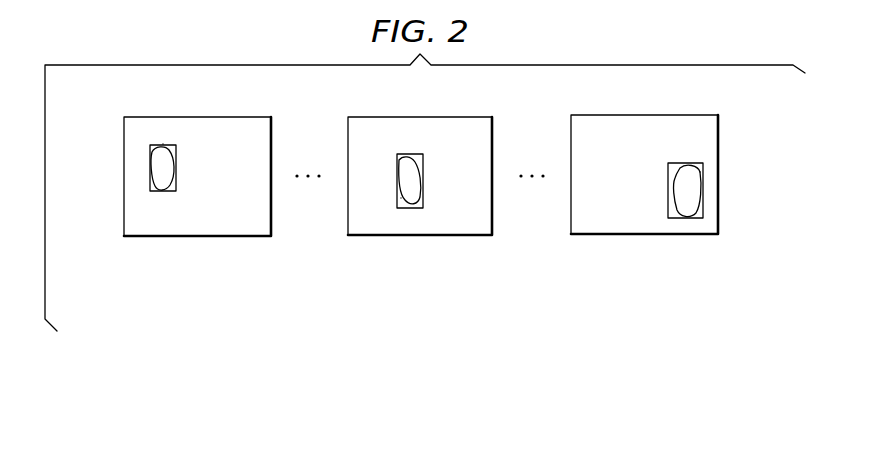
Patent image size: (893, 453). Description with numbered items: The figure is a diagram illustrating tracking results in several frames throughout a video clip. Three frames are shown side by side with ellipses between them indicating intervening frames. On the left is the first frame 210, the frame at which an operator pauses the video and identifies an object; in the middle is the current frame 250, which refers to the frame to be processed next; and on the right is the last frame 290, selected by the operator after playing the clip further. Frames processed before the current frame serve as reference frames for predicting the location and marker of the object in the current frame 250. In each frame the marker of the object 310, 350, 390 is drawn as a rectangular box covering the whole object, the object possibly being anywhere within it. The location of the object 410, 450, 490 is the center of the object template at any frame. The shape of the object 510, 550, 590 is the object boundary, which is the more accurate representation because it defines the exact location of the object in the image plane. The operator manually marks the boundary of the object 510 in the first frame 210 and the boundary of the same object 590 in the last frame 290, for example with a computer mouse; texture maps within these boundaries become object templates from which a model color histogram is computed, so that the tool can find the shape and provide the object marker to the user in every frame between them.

The first frame 210 is at (141, 237).
The current frame 250 is at (458, 236).
The last frame 290 is at (583, 235).
The marker of the object 310 is at (163, 144).
The marker of the object 350 is at (407, 155).
The marker of the object 390 is at (687, 219).
The location of the object 410 is at (160, 170).
The location of the object 450 is at (414, 192).
The location of the object 490 is at (691, 197).
The shape of the object 510 is at (150, 151).
The shape of the object 550 is at (401, 198).
The shape of the object 590 is at (700, 172).